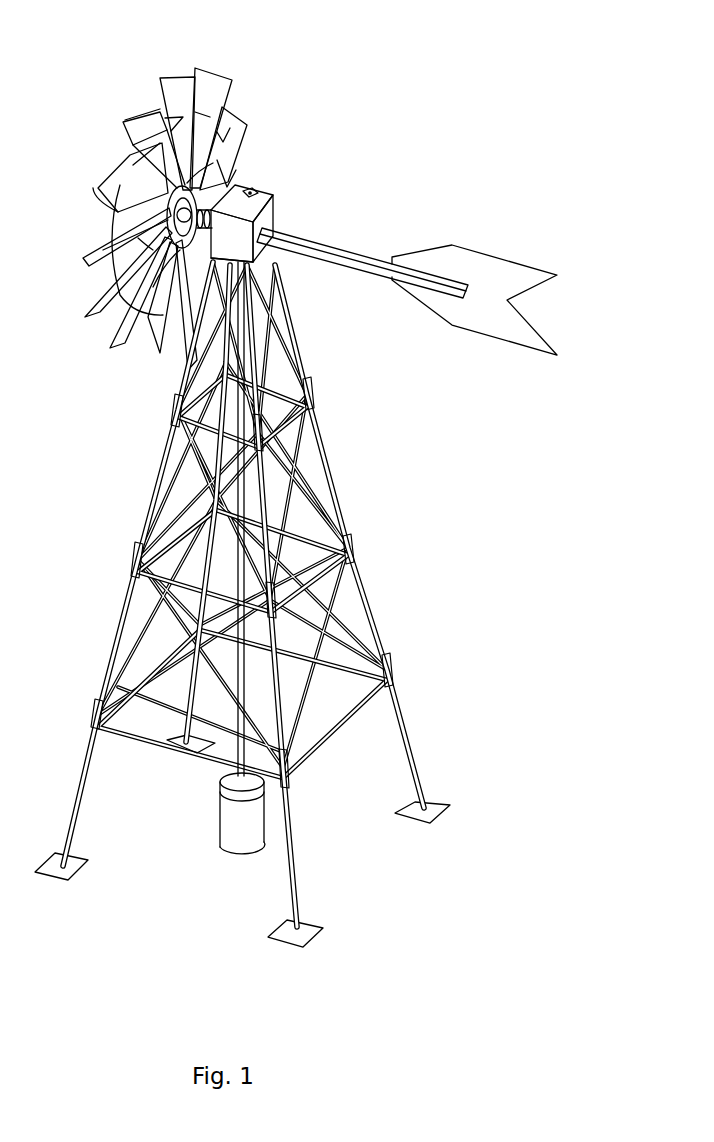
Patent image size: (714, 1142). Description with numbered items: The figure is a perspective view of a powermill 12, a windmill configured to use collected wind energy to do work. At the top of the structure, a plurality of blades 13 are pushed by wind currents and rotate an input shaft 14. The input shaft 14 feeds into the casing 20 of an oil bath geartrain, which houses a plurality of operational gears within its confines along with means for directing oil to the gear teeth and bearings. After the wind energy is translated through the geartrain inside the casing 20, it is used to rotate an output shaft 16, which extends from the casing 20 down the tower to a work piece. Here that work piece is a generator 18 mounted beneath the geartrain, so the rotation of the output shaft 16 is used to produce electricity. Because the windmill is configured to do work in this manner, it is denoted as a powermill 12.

The powermill 12 is at (462, 153).
The blades 13 is at (213, 85).
The input shaft 14 is at (92, 320).
The output shaft 16 is at (247, 673).
The generator 18 is at (233, 820).
The casing 20 is at (278, 180).